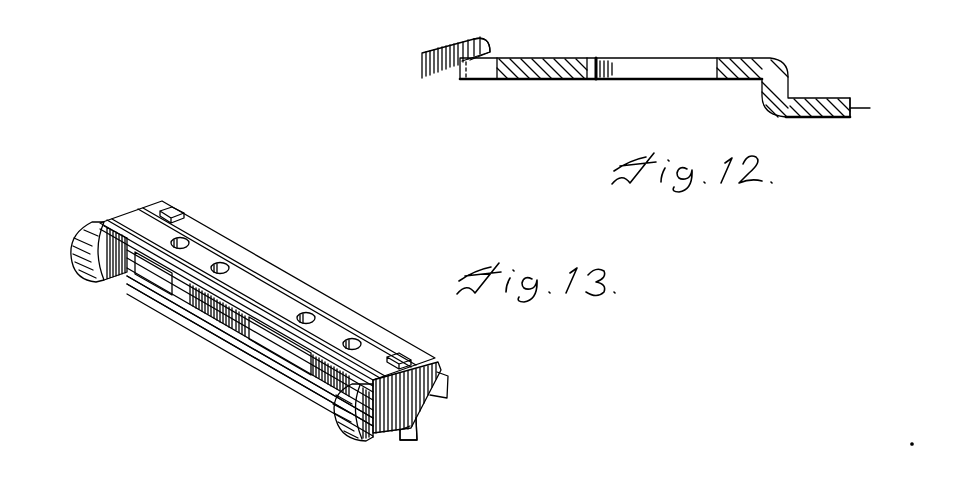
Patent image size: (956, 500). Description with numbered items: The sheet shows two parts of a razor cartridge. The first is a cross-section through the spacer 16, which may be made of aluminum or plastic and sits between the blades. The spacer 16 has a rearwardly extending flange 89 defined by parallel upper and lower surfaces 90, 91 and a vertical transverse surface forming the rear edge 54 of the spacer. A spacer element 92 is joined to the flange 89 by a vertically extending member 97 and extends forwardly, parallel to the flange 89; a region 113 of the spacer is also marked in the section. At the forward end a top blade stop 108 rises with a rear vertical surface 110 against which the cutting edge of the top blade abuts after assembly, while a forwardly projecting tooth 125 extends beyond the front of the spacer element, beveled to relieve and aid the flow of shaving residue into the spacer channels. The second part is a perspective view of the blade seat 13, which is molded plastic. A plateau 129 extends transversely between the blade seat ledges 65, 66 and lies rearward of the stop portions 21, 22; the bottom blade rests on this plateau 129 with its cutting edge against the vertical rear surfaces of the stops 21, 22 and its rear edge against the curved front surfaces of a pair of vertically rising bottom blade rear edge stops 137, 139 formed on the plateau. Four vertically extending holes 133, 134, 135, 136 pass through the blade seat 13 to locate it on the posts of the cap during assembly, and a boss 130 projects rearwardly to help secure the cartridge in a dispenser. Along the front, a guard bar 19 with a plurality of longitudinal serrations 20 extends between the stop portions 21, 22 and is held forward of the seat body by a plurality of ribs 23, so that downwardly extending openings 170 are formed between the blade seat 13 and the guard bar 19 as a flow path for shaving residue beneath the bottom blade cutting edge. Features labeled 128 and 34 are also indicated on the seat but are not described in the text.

In FIG. 12, the spacer 16 is at (548, 88).
In FIG. 12, the top blade stop 108 is at (452, 42).
In FIG. 12, the rear vertical surface of blade stop 110 is at (487, 50).
In FIG. 12, the forwardly projecting tooth 125 is at (462, 70).
In FIG. 12, the spacer element 92 is at (578, 58).
In FIG. 12, the channel portion 113 is at (635, 66).
In FIG. 12, the vertically extending member 97 is at (788, 80).
In FIG. 12, the upper surface of flange 90 is at (808, 98).
In FIG. 12, the rearwardly extending flange 89 is at (838, 100).
In FIG. 12, the rear edge of spacer 54 is at (870, 108).
In FIG. 12, the lower surface of flange 91 is at (815, 118).
In FIG. 13, the blade seat 13 is at (478, 395).
In FIG. 13, the blade seat ledge 65 is at (137, 212).
In FIG. 13, the front rib 128 is at (338, 328).
In FIG. 13, the plateau 129 is at (255, 274).
In FIG. 13, the boss 130 is at (305, 282).
In FIG. 13, the vertically extending hole 133 is at (188, 238).
In FIG. 13, the vertically extending hole 134 is at (228, 262).
In FIG. 13, the vertically extending hole 135 is at (312, 313).
In FIG. 13, the vertically extending hole 136 is at (368, 340).
In FIG. 13, the bottom blade rear edge stop 137 is at (160, 205).
In FIG. 13, the bottom blade rear edge stop 139 is at (410, 354).
In FIG. 13, the blade seat ledge 66 is at (442, 360).
In FIG. 13, the hook 34 is at (422, 411).
In FIG. 13, the stop portion of blade seat 21 is at (85, 243).
In FIG. 13, the stop portion of blade seat 22 is at (360, 440).
In FIG. 13, the downwardly extending opening 170 is at (148, 268).
In FIG. 13, the rib 23 is at (175, 283).
In FIG. 13, the guard bar 19 is at (220, 338).
In FIG. 13, the longitudinal serration 20 is at (250, 365).